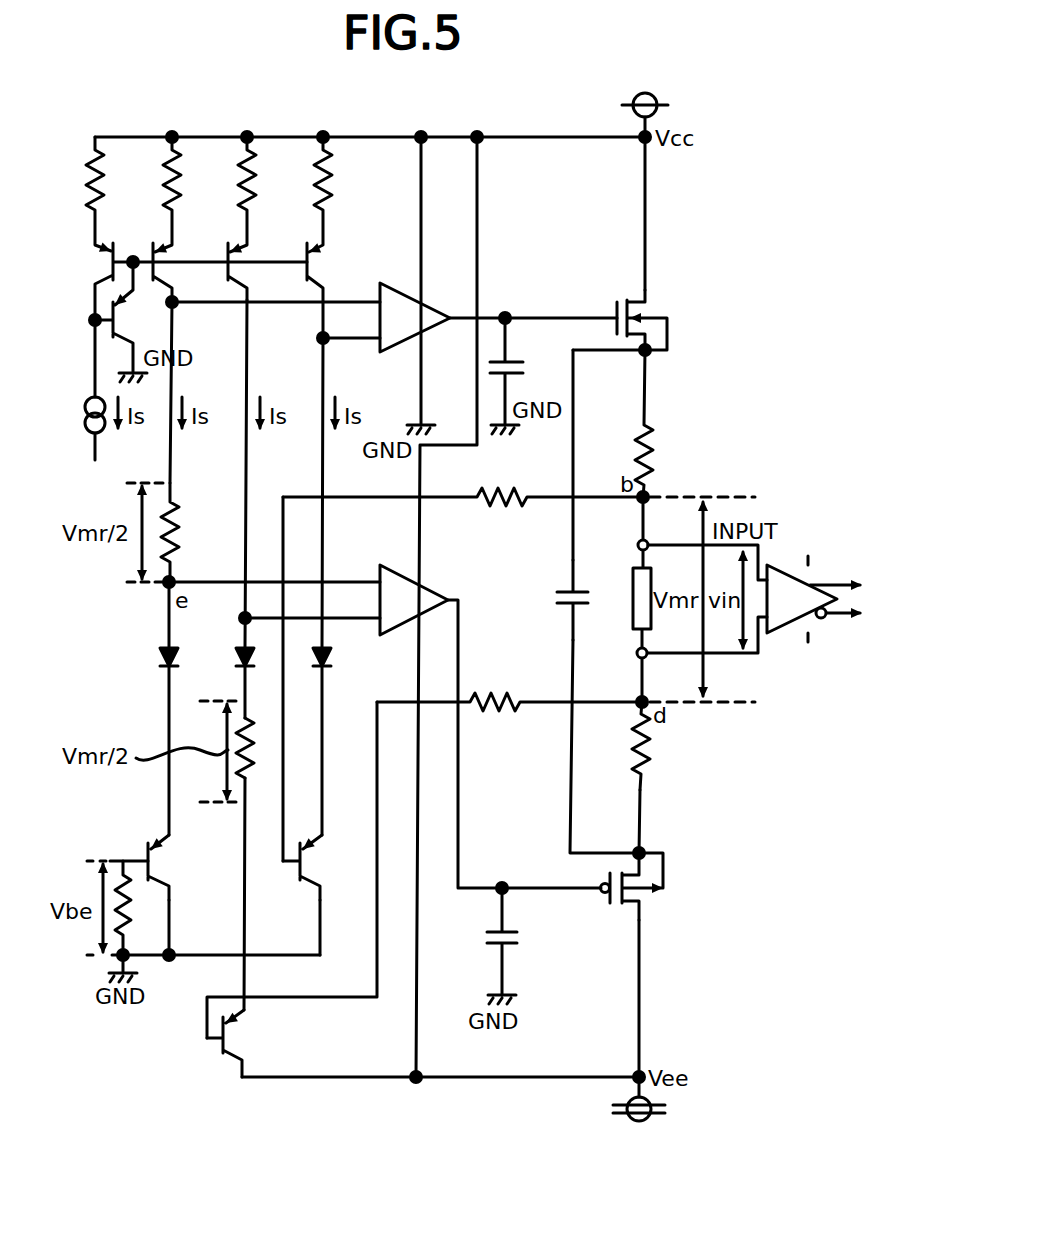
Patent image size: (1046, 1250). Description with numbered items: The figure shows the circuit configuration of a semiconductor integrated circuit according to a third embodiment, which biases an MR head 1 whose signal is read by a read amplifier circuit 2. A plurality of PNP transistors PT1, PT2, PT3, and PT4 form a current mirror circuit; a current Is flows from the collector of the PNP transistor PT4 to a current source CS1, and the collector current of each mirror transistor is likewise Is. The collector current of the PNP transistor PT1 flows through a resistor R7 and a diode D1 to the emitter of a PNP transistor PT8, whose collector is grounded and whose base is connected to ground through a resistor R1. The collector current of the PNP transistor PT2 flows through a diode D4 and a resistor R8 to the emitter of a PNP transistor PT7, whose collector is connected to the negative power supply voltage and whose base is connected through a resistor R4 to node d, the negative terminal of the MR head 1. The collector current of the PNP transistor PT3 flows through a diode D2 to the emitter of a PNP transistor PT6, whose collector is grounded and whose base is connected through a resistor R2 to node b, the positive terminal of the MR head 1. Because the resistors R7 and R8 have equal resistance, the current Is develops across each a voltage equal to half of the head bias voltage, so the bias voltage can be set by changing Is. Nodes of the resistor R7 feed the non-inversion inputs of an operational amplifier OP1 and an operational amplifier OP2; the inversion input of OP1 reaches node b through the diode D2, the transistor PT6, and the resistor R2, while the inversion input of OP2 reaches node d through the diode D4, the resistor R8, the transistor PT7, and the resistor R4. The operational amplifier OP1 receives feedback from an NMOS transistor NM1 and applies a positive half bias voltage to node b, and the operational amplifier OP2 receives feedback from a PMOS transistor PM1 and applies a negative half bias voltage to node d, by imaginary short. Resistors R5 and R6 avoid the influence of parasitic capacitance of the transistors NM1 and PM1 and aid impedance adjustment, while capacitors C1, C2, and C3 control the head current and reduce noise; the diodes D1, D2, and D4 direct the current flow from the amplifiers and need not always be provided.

The MR head 1 is at (640, 563).
The read amplifier circuit 2 is at (778, 634).
The PNP transistor PT1 is at (188, 275).
The PNP transistor PT2 is at (262, 271).
The PNP transistor PT3 is at (340, 293).
The PNP transistor PT4 is at (104, 320).
The PNP transistor PT6 is at (323, 867).
The PNP transistor PT7 is at (248, 1043).
The PNP transistor PT8 is at (178, 867).
The resistor R1 is at (139, 908).
The resistor R2 is at (463, 482).
The resistor R4 is at (509, 688).
The resistor R5 is at (625, 423).
The resistor R6 is at (624, 746).
The resistor R7 is at (190, 532).
The resistor R8 is at (257, 745).
The capacitor C1 is at (556, 600).
The capacitor C2 is at (523, 371).
The capacitor C3 is at (484, 941).
The diode D1 is at (151, 659).
The diode D2 is at (339, 659).
The diode D4 is at (227, 659).
The operational amplifier OP1 is at (425, 316).
The operational amplifier OP2 is at (426, 599).
The NMOS transistor NM1 is at (667, 320).
The PMOS transistor PM1 is at (648, 889).
The current source CS1 is at (66, 428).